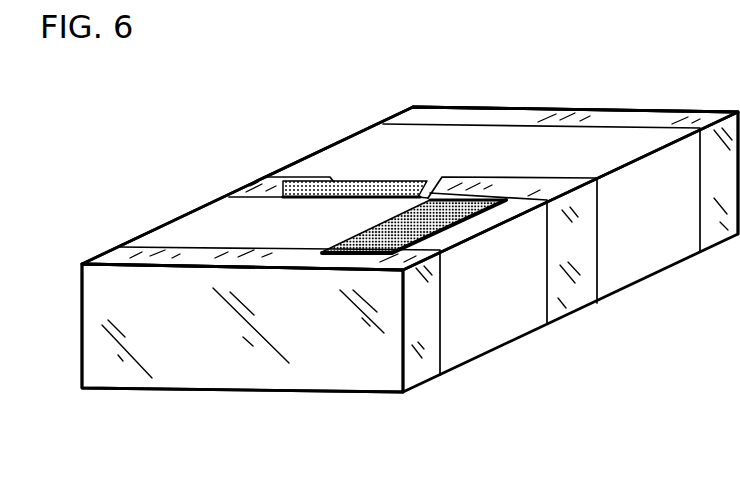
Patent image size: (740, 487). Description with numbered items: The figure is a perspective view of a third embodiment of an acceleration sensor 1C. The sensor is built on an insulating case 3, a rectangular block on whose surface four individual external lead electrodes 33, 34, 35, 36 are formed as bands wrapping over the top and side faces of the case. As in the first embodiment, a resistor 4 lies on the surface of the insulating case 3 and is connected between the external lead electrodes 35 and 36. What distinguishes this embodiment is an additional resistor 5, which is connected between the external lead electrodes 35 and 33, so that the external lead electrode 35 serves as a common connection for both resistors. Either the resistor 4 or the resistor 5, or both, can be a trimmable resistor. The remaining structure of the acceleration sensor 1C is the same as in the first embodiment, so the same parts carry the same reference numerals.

The acceleration sensor 1C is at (546, 102).
The insulating case 3 is at (436, 137).
The resistor 4 is at (357, 182).
The resistor 5 is at (460, 222).
The external lead electrode 33 is at (237, 373).
The external lead electrode 34 is at (633, 118).
The external lead electrode 35 is at (572, 297).
The external lead electrode 36 is at (247, 187).